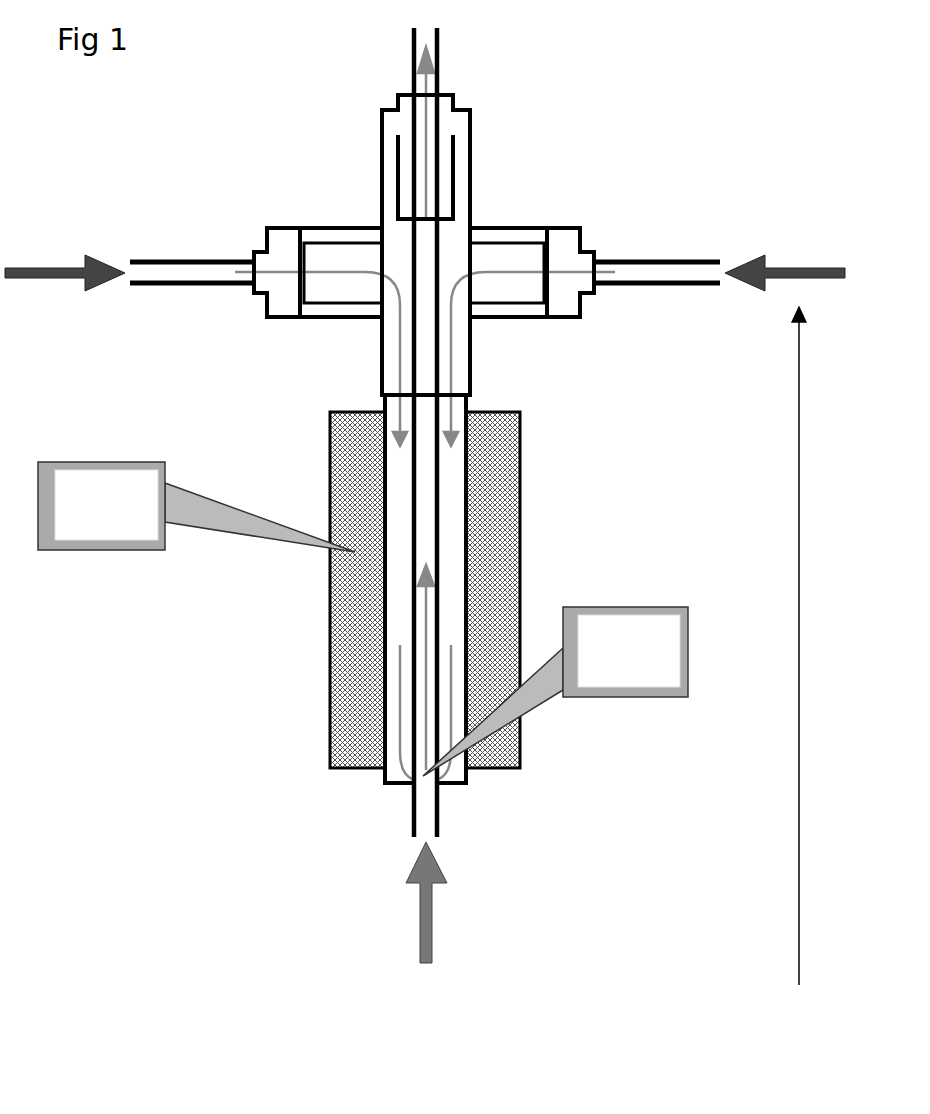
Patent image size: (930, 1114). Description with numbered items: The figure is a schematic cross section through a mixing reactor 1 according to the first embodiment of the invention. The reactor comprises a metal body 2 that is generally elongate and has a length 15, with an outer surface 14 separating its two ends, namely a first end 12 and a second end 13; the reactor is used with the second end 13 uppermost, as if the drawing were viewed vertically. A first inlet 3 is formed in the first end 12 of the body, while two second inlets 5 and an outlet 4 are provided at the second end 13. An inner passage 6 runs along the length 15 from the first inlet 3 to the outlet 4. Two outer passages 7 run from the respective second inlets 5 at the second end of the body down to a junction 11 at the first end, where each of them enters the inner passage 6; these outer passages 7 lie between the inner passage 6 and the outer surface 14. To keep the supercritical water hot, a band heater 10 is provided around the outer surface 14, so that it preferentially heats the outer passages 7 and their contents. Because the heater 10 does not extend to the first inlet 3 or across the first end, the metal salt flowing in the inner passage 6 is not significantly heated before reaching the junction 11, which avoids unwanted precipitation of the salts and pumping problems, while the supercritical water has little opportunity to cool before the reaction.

The mixing reactor 1 is at (352, 818).
The metal body 2 is at (385, 777).
The first inlet 3 is at (440, 810).
The outlet 4 is at (470, 61).
The second inlets 5 is at (340, 318).
The inner passage 6 is at (420, 537).
The outer passages 7 is at (393, 482).
The band heater 10 is at (196, 507).
The junction 11 is at (555, 691).
The first end 12 is at (465, 790).
The second end 13 is at (472, 220).
The outer surface 14 is at (385, 572).
The length 15 is at (798, 800).